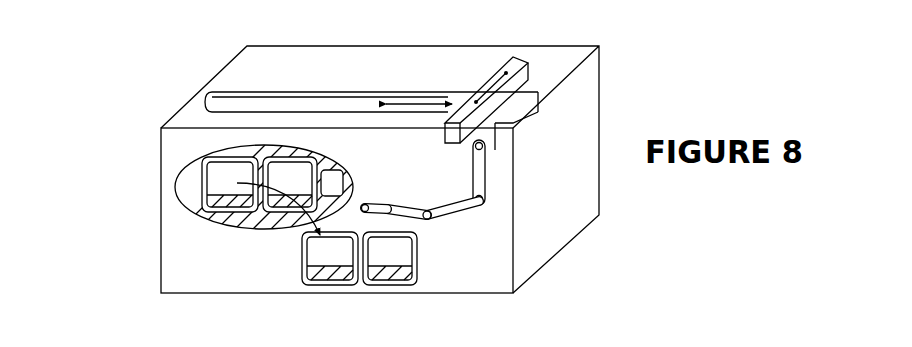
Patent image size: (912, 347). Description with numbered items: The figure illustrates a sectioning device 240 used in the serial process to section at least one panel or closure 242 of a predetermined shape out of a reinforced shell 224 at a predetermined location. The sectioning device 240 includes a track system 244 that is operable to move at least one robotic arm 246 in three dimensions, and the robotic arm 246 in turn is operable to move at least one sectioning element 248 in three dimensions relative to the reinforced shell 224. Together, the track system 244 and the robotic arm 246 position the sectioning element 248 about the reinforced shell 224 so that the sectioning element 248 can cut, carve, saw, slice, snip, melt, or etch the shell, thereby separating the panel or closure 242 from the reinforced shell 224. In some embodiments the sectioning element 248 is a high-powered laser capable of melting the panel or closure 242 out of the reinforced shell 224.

The sectioning device 240 is at (137, 100).
The track system 244 is at (453, 80).
The robotic arm 246 is at (458, 208).
The sectioning element 248 is at (364, 204).
The reinforced shell 224 is at (222, 217).
The panel or closure 242 is at (312, 286).